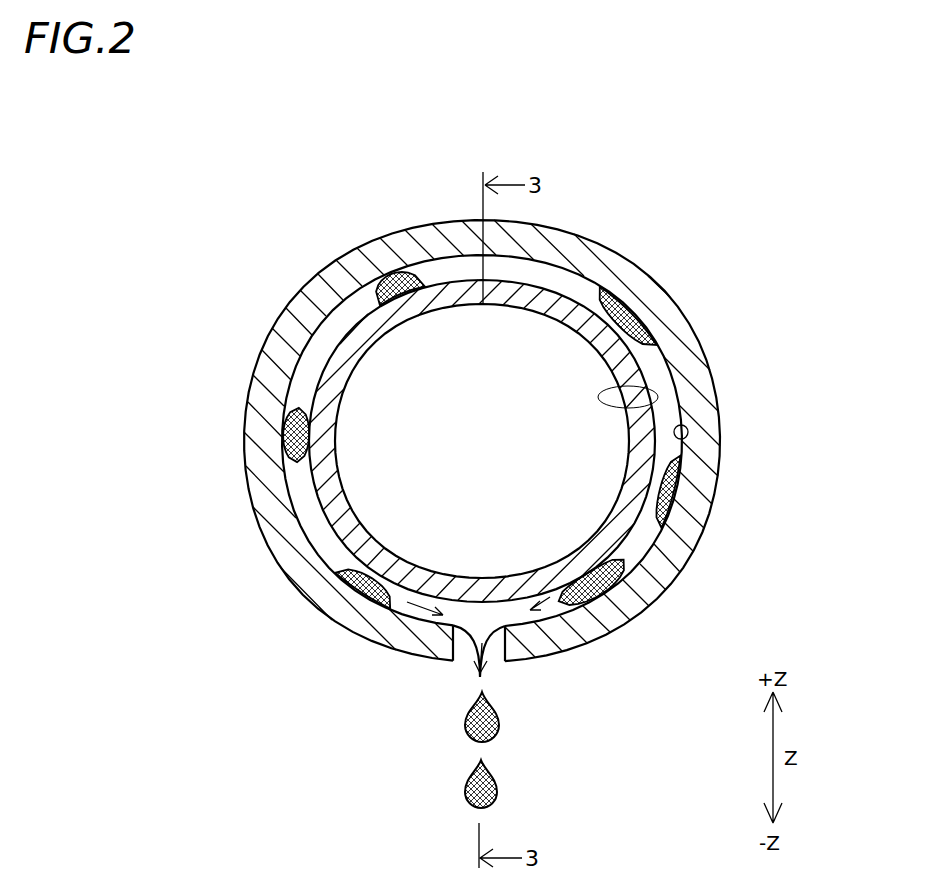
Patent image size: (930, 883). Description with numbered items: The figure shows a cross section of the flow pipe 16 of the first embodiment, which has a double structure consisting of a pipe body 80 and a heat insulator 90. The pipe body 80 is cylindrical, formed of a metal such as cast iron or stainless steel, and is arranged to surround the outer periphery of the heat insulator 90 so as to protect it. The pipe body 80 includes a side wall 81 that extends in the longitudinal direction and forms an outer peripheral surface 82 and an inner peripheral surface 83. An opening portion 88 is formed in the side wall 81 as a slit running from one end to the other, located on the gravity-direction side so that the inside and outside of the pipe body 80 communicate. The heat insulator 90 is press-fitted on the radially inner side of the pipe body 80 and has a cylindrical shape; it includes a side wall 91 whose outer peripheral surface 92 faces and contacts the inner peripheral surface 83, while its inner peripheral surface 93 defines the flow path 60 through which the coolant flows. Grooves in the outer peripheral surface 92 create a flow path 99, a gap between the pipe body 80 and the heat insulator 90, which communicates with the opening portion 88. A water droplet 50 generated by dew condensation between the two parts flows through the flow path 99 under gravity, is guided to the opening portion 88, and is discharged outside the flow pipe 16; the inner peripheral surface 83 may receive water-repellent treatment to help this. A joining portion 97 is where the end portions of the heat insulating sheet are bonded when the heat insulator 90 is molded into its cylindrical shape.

The flow pipe 16 is at (752, 229).
The water droplet 50 is at (630, 312).
The flow path 60 is at (500, 455).
The pipe body 80 is at (713, 338).
The side wall 81 is at (707, 477).
The outer peripheral surface 82 is at (722, 468).
The inner peripheral surface 83 is at (688, 438).
The opening portion 88 is at (495, 660).
The heat insulator 90 is at (298, 389).
The side wall 91 is at (607, 540).
The outer peripheral surface 92 is at (677, 377).
The inner peripheral surface 93 is at (658, 406).
The joining portion 97 is at (487, 278).
The flow path 99 is at (440, 273).